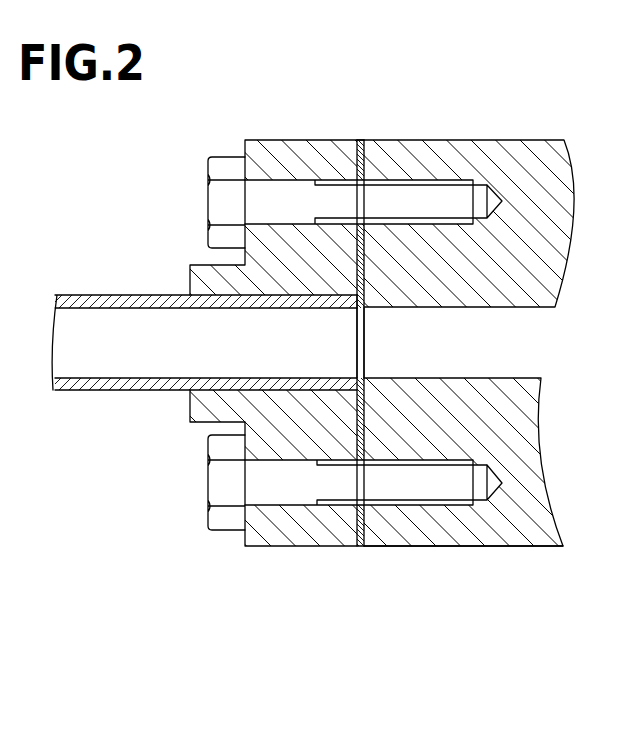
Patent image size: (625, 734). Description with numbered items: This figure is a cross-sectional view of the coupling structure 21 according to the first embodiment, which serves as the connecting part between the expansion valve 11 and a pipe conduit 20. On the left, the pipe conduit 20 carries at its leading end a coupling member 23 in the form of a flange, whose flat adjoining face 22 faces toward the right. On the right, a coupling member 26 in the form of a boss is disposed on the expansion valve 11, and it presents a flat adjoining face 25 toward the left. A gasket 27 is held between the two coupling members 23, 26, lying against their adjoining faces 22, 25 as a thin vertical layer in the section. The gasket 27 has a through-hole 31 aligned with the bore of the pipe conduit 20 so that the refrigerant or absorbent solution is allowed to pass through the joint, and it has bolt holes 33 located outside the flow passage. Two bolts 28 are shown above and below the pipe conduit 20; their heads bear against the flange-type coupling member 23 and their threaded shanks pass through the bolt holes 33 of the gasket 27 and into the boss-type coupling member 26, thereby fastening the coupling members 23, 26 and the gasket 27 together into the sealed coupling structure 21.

The expansion valve 11 is at (463, 614).
The coupling member 26 is at (467, 556).
The pipe conduit 20 is at (78, 294).
The coupling structure 21 is at (426, 621).
The adjoining face 22 is at (360, 278).
The coupling member 23 is at (274, 132).
The adjoining face 25 is at (358, 545).
The gasket 27 is at (360, 130).
The bolt 28 is at (208, 203).
The through-hole 31 is at (358, 370).
The bolt hole 33 is at (363, 187).